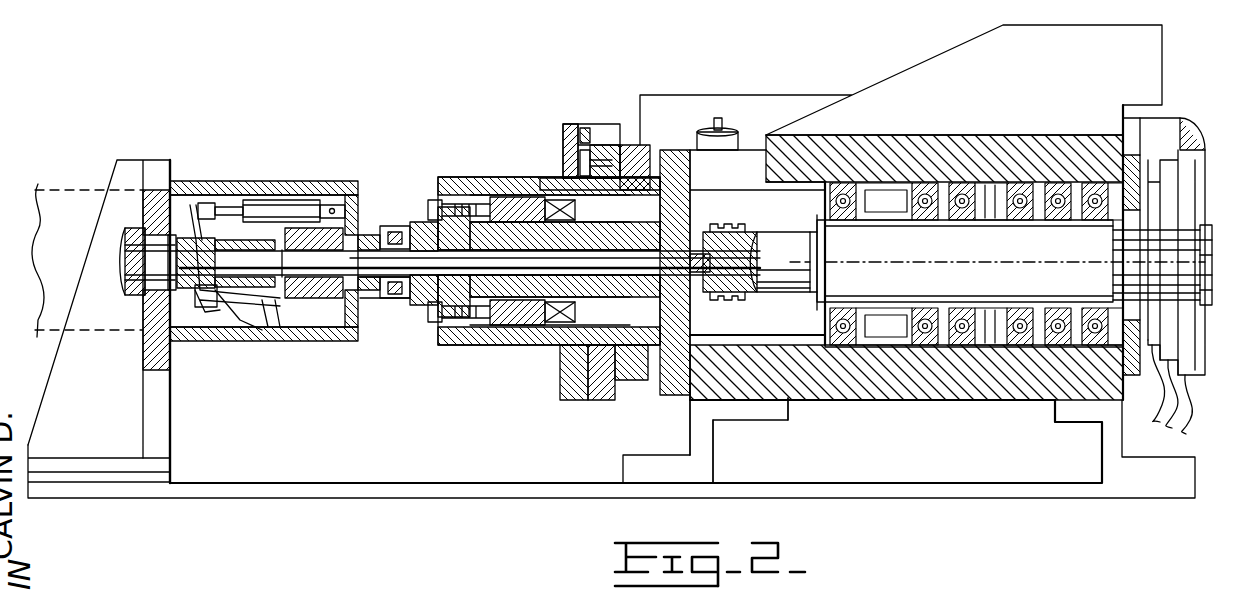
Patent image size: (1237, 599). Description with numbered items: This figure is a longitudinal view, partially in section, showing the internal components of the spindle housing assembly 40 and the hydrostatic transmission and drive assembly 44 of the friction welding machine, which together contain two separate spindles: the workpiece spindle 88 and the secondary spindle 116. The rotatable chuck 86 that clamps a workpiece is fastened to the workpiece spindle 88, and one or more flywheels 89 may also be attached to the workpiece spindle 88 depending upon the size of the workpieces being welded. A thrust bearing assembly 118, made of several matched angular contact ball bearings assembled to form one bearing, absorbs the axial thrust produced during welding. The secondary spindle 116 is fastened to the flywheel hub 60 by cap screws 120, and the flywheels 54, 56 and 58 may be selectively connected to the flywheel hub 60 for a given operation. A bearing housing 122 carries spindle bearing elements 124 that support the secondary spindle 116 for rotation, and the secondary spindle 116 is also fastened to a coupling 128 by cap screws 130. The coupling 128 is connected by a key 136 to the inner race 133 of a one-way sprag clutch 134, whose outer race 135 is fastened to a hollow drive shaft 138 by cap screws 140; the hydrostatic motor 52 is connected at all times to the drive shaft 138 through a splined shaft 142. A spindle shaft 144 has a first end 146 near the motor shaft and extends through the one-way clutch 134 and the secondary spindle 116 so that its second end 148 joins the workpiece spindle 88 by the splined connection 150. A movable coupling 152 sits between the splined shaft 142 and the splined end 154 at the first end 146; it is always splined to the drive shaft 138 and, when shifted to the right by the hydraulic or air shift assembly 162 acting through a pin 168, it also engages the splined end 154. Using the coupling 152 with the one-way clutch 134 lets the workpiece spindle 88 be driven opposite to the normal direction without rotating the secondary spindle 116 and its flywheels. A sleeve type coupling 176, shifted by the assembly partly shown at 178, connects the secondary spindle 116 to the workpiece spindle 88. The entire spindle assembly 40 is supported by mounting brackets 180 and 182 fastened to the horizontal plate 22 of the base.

The horizontal plate 22 is at (445, 490).
The spindle housing assembly 40 is at (861, 48).
The hydrostatic transmission and drive assembly 44 is at (238, 112).
The hydrostatic motor 52 is at (72, 186).
The flywheel 54 is at (592, 132).
The flywheel 56 is at (576, 126).
The flywheel 58 is at (566, 130).
The flywheel hub 60 is at (644, 150).
The rotatable chuck 86 is at (1140, 245).
The workpiece spindle 88 is at (928, 257).
The flywheel 89 is at (1160, 412).
The secondary spindle 116 is at (562, 338).
The thrust bearing assembly 118 is at (996, 163).
The cap screws 120 is at (436, 200).
The bearing housing 122 is at (690, 168).
The spindle bearing elements 124 is at (546, 192).
The coupling 128 is at (418, 192).
The cap screws 130 is at (432, 308).
The inner race 133 is at (273, 326).
The one-way sprag clutch 134 is at (371, 190).
The outer race 135 is at (293, 152).
The key 136 is at (428, 232).
The hollow drive shaft 138 is at (133, 273).
The cap screws 140 is at (270, 330).
The splined shaft 142 is at (133, 240).
The spindle shaft 144 is at (436, 282).
The first end 146 is at (228, 322).
The second end 148 is at (695, 297).
The splined connection 150 is at (760, 256).
The movable coupling 152 is at (180, 182).
The splined end 154 is at (222, 326).
The hydraulic or air shift assembly 162 is at (232, 183).
The pin 168 is at (143, 310).
The sleeve type coupling 176 is at (735, 222).
The shift assembly 178 is at (722, 128).
The mounting bracket 180 is at (778, 423).
The mounting bracket 182 is at (1052, 418).